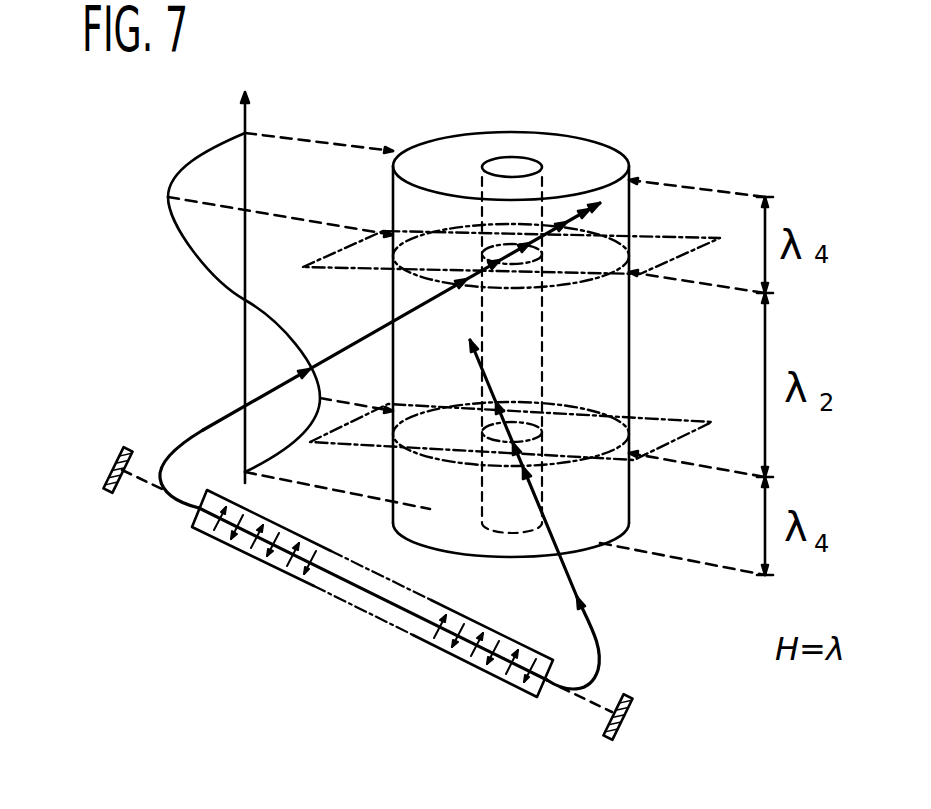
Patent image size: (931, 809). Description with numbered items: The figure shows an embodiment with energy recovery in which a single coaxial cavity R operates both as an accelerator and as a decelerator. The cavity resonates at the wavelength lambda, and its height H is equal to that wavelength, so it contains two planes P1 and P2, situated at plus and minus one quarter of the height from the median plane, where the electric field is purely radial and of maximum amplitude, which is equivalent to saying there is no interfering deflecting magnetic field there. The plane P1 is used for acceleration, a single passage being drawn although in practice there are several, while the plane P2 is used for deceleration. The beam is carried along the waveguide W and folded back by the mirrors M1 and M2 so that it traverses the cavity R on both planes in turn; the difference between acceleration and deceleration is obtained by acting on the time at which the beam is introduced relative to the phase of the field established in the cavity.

The cylindrical resonator R is at (600, 131).
The plane P1 is at (585, 311).
The plane P2 is at (582, 497).
The waveguide W is at (300, 581).
The first mirror M1 is at (108, 493).
The second mirror M2 is at (632, 706).